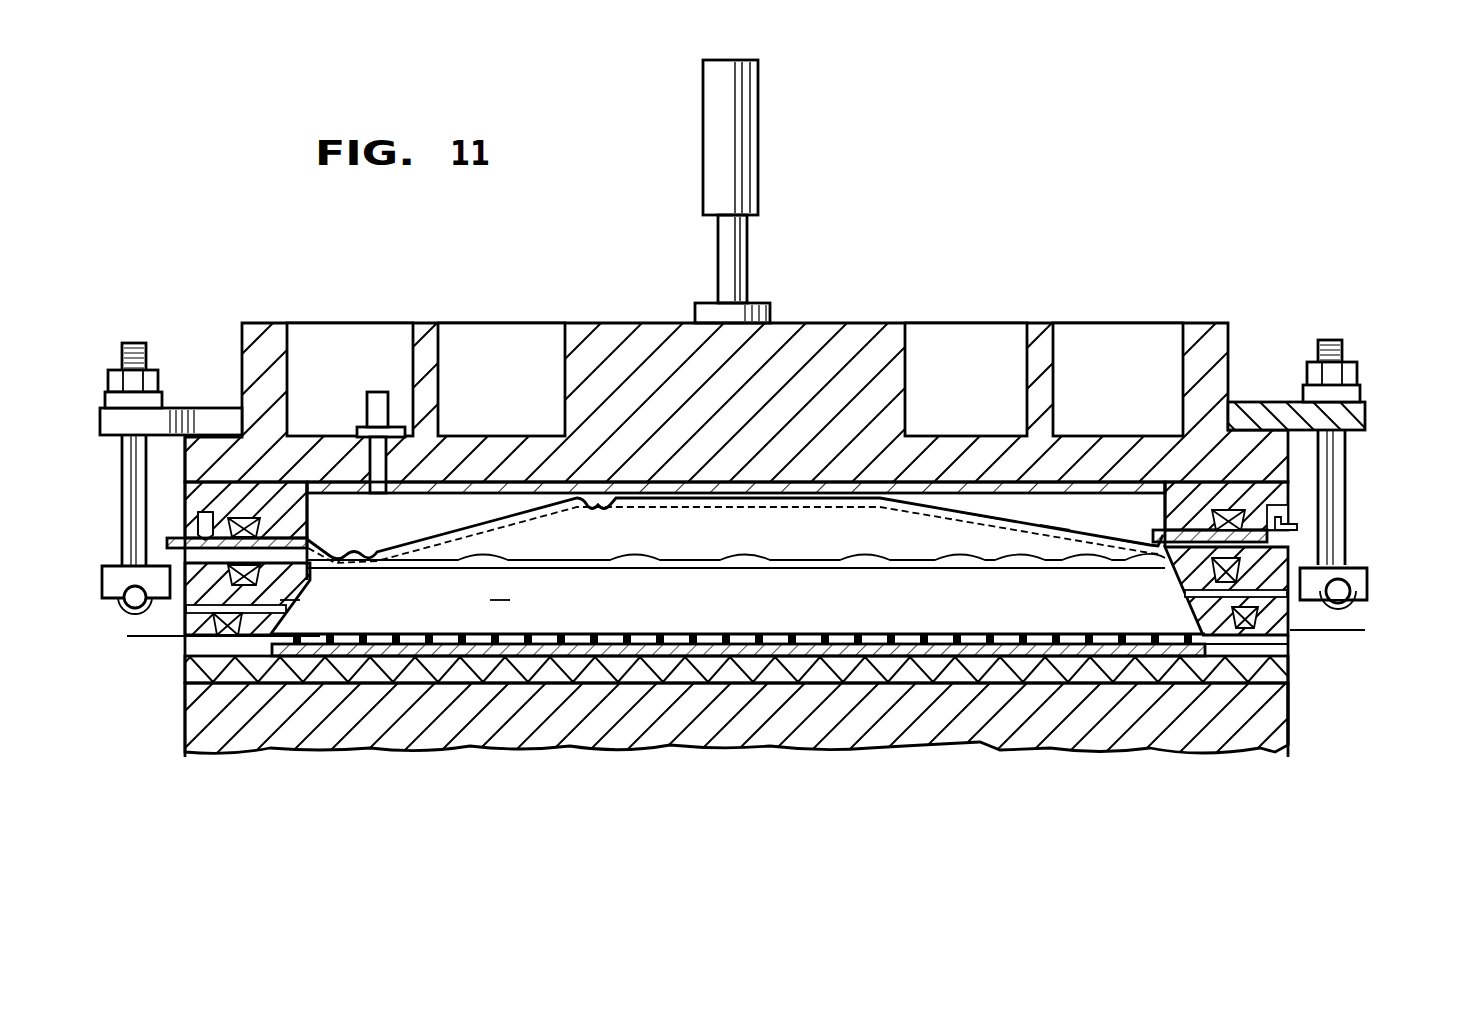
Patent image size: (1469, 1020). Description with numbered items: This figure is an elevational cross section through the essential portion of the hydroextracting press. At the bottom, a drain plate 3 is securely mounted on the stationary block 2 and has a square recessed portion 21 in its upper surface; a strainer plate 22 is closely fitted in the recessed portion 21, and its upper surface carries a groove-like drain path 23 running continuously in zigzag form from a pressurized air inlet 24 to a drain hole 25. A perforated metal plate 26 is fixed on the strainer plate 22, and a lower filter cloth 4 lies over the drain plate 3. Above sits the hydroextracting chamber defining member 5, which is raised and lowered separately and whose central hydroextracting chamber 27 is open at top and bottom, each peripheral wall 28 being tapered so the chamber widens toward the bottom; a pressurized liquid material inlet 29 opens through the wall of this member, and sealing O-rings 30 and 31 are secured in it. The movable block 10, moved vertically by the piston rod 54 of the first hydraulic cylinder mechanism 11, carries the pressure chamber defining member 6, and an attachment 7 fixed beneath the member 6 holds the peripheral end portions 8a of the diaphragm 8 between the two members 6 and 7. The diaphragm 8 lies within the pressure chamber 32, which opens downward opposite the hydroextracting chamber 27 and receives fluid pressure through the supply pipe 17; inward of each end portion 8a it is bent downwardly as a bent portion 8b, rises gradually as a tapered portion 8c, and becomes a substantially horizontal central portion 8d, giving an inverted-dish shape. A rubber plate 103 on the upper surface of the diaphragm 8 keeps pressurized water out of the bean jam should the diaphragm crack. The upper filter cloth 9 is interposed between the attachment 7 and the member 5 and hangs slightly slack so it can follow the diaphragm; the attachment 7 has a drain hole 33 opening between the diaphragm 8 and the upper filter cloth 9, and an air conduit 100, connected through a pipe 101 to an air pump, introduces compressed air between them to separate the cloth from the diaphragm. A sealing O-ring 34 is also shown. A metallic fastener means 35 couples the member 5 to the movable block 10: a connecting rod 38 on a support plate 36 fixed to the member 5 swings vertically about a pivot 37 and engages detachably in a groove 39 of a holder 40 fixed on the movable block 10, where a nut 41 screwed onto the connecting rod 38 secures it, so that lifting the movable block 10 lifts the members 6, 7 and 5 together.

The stationary block 2 is at (220, 718).
The drain plate 3 is at (200, 668).
The lower filter cloth 4 is at (1305, 685).
The hydroextracting chamber defining member 5 is at (195, 600).
The pressure chamber defining member 6 is at (262, 475).
The attachment 7 is at (1300, 550).
The diaphragm 8 is at (935, 505).
The peripheral end portion 8a is at (1143, 540).
The bent portion 8b is at (340, 540).
The tapered portion 8c is at (975, 520).
The central portion 8d is at (810, 505).
The upper filter cloth 9 is at (765, 550).
The movable block 10 is at (632, 345).
The first hydraulic cylinder mechanism 11 is at (748, 130).
The supply pipe 17 is at (390, 410).
The recessed portion 21 is at (563, 645).
The strainer plate 22 is at (672, 645).
The drain path 23 is at (420, 642).
The pressurized air inlet 24 is at (1255, 652).
The drain hole 25 is at (290, 600).
The perforated metal plate 26 is at (792, 632).
The hydroextracting chamber 27 is at (500, 600).
The peripheral wall 28 is at (280, 618).
The pressurized liquid material inlet 29 is at (1300, 635).
The sealing O-ring 30 is at (300, 593).
The sealing O-ring 31 is at (235, 535).
The pressure chamber 32 is at (485, 500).
The drain hole 33 is at (300, 535).
The sealing O-ring 34 is at (235, 520).
The metallic fastener means 35 is at (98, 376).
The support plate 36 is at (1350, 602).
The pivot 37 is at (1340, 610).
The connecting rod 38 is at (1330, 345).
The groove 39 is at (1360, 405).
The holder 40 is at (1255, 410).
The nut 41 is at (1305, 380).
The piston rod 54 is at (750, 244).
The air conduit 100 is at (1080, 572).
The pipe 101 is at (1295, 512).
The rubber plate 103 is at (1055, 525).